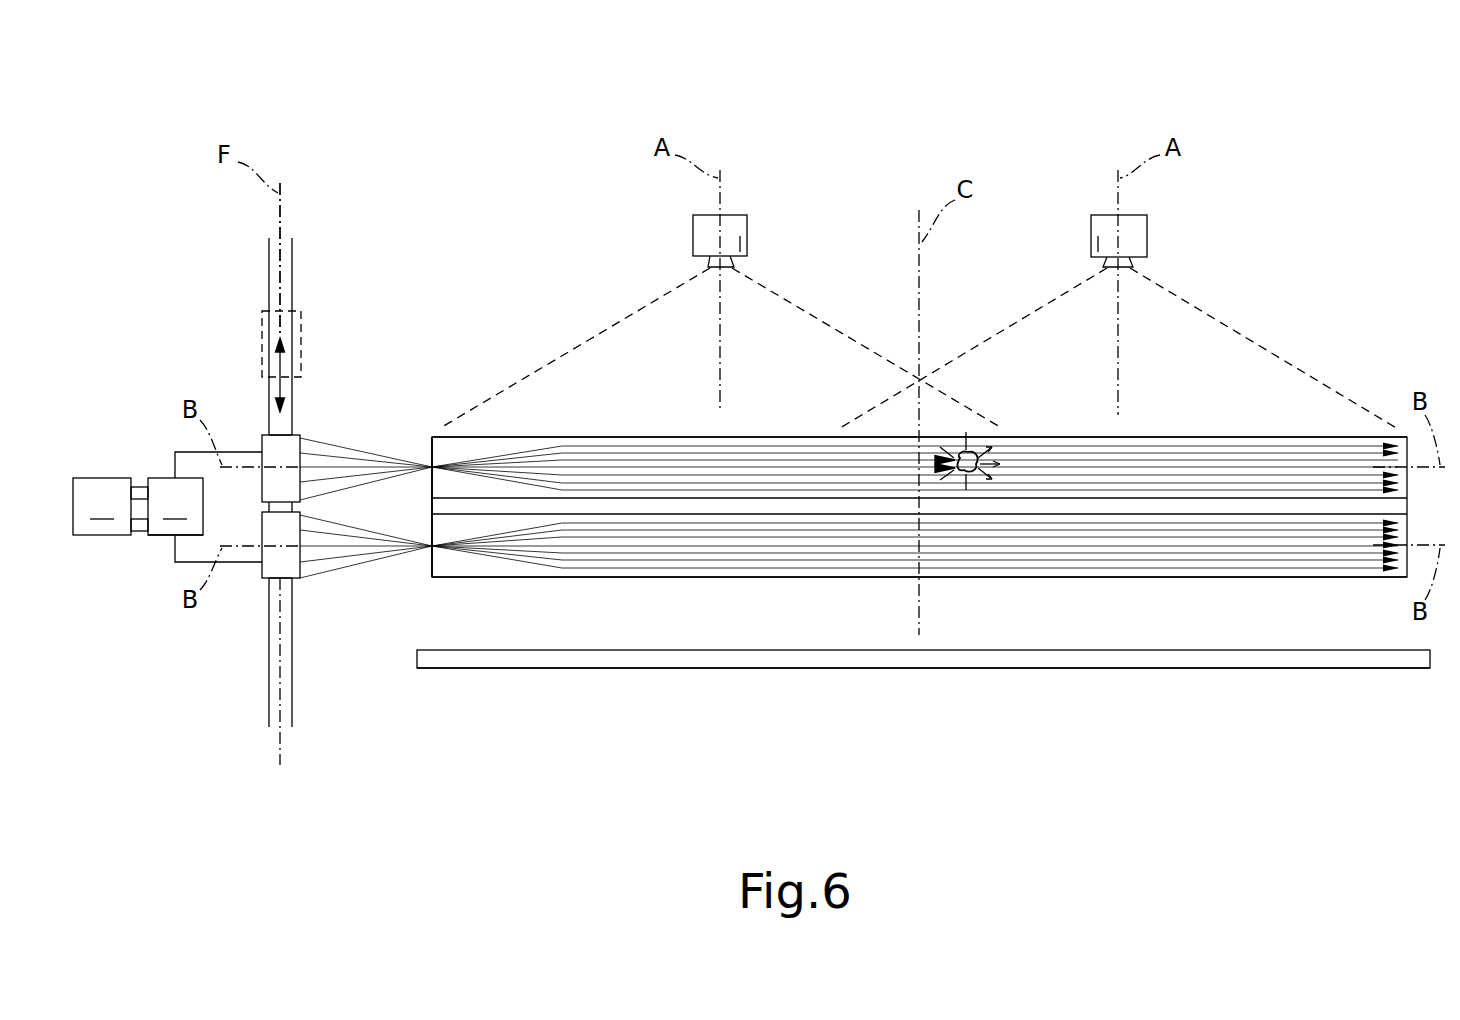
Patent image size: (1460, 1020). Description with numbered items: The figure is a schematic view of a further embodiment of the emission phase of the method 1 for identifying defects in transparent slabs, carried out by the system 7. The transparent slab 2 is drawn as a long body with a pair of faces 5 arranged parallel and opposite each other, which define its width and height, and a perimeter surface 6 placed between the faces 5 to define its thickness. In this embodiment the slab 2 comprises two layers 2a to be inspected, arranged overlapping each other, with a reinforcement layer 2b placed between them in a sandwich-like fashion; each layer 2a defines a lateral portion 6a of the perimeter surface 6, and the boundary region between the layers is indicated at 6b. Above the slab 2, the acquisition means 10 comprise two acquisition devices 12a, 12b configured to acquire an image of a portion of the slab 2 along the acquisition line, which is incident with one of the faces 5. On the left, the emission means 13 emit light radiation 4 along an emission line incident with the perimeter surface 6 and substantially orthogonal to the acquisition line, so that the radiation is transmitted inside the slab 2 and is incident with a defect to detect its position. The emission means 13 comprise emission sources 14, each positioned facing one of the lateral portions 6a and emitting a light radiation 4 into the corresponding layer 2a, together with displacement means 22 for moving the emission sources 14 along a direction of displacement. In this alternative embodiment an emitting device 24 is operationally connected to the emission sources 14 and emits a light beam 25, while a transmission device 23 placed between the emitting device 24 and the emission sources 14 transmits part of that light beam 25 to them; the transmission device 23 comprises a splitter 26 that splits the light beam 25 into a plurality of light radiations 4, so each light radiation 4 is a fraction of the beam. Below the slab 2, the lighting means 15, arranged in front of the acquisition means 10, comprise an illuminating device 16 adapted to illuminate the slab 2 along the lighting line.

The method 1 is at (250, 362).
The transparent slab 2 is at (392, 640).
The layer 2a is at (432, 455).
The reinforcement layer 2b is at (432, 507).
The light radiation 4 is at (362, 470).
The face 5 is at (1253, 437).
The perimeter surface 6 is at (672, 400).
The lateral portion 6a is at (468, 450).
The separating gap 6b is at (728, 515).
The system 7 is at (388, 284).
The acquisition means 10 is at (668, 215).
The acquisition device 12a is at (1103, 243).
The acquisition device 12b is at (737, 243).
The emission means 13 is at (306, 400).
The emission source 14 is at (280, 450).
The lighting means 15 is at (458, 690).
The illuminating device 16 is at (572, 650).
The displacement means 22 is at (256, 266).
The transmission device 23 is at (150, 572).
The emitting device 24 is at (102, 506).
The light beam 25 is at (135, 490).
The splitter 26 is at (205, 507).